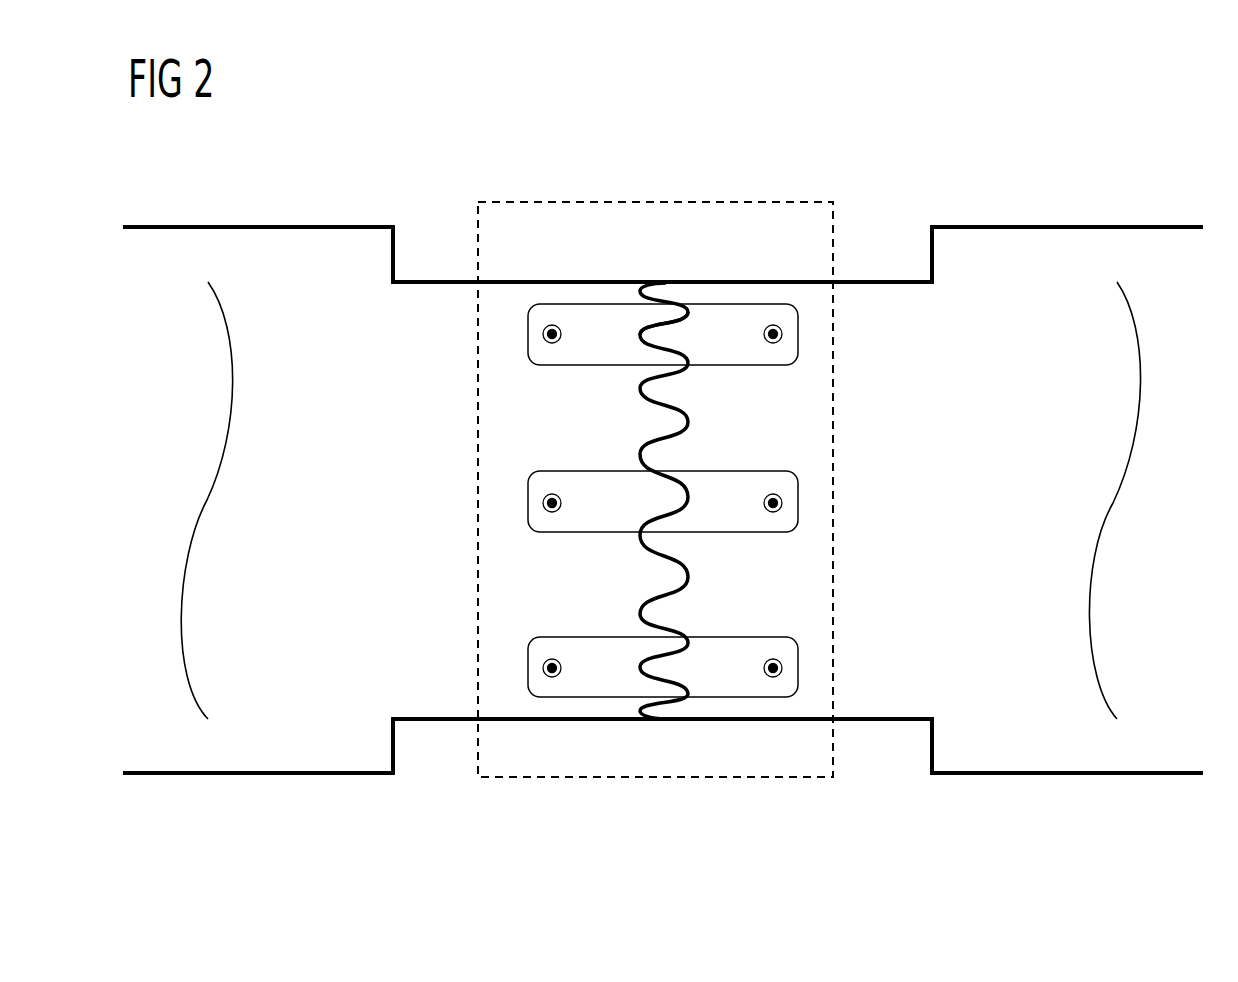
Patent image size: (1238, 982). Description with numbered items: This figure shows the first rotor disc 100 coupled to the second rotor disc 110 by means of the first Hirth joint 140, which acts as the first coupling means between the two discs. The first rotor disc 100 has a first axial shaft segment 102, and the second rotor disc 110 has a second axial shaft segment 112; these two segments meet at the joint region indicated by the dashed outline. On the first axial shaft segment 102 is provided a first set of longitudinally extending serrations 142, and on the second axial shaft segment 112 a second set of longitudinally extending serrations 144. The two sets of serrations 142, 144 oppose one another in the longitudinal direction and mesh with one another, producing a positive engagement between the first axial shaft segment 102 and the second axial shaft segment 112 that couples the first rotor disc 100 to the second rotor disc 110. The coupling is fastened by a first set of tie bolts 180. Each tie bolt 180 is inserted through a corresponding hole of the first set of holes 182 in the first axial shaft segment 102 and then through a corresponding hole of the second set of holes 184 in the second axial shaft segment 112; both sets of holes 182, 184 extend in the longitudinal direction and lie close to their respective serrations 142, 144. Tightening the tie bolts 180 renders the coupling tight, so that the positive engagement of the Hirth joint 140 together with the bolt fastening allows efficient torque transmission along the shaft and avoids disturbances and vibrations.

The first rotor disc 100 is at (203, 255).
The first axial shaft segment 102 is at (438, 688).
The second rotor disc 110 is at (1135, 252).
The second axial shaft segment 112 is at (875, 690).
The first Hirth joint 140 is at (684, 155).
The first set of longitudinally extending serrations 142 is at (590, 295).
The second set of longitudinally extending serrations 144 is at (712, 295).
The first set of tie bolts 180 is at (733, 333).
The first set of holes 182 is at (545, 338).
The second set of holes 184 is at (781, 338).